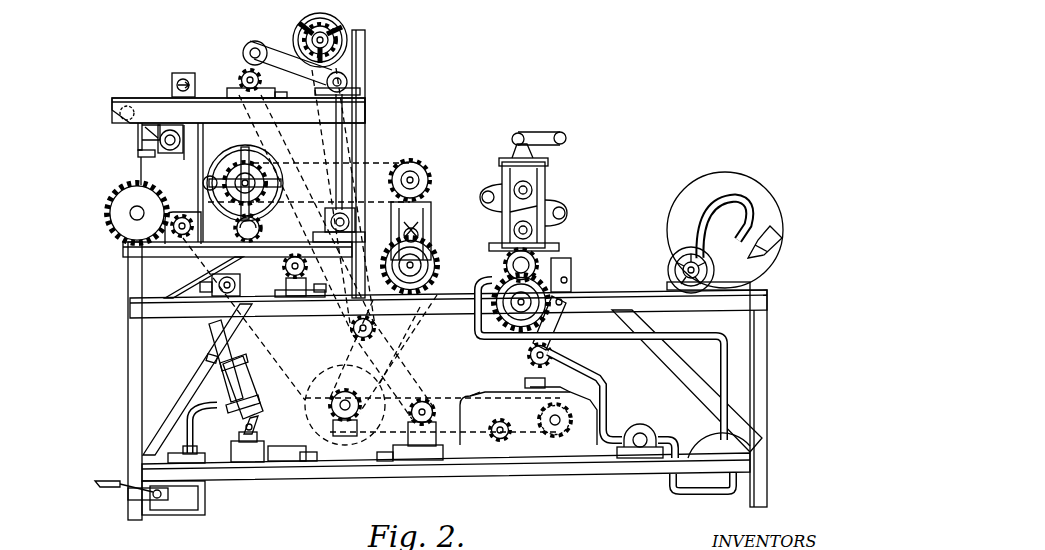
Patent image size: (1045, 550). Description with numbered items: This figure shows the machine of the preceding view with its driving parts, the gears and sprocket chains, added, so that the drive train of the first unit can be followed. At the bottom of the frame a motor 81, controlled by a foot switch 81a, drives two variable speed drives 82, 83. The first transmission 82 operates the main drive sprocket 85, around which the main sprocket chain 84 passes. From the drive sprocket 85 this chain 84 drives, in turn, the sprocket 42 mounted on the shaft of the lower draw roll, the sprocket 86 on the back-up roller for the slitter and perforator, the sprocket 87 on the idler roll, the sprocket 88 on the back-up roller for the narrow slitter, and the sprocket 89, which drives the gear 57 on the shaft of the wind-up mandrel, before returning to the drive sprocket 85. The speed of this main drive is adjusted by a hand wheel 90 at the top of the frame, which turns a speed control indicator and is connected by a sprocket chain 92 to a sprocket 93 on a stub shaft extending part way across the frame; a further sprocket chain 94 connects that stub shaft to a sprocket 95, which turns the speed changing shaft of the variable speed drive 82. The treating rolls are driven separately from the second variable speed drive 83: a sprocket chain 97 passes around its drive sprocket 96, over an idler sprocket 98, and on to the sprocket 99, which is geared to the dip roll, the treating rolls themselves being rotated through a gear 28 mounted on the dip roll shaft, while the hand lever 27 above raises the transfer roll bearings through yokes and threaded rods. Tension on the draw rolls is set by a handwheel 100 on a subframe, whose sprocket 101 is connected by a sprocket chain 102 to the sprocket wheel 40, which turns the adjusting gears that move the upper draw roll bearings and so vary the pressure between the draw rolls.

The hand lever 27 is at (540, 136).
The gear 28 is at (503, 263).
The sprocket wheel 40 is at (420, 172).
The gear 42 is at (432, 258).
The gear 57 is at (118, 214).
The motor 81 is at (292, 385).
The foot switch 81a is at (121, 483).
The variable speed drive 82 is at (292, 415).
The variable speed drive 83 is at (596, 412).
The main sprocket chain 84 is at (375, 185).
The main drive sprocket 85 is at (346, 392).
The sprocket 86 is at (244, 76).
The sprocket 87 is at (310, 267).
The sprocket 88 is at (264, 231).
The sprocket 89 is at (192, 252).
The hand wheel 90 is at (346, 30).
The sprocket chain 92 is at (352, 111).
The sprocket 93 is at (361, 340).
The sprocket chain 94 is at (404, 342).
The sprocket 95 is at (428, 396).
The sprocket 96 is at (508, 436).
The sprocket chain 97 is at (486, 350).
The idler sprocket 98 is at (552, 355).
The sprocket 99 is at (555, 292).
The handwheel 100 is at (262, 165).
The sprocket 101 is at (268, 179).
The sprocket chain 102 is at (292, 199).